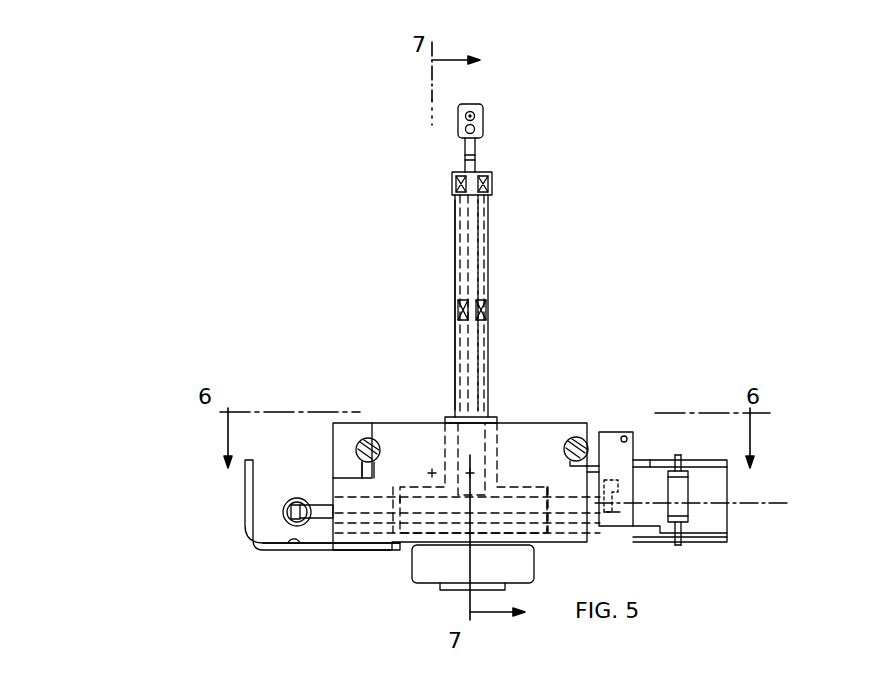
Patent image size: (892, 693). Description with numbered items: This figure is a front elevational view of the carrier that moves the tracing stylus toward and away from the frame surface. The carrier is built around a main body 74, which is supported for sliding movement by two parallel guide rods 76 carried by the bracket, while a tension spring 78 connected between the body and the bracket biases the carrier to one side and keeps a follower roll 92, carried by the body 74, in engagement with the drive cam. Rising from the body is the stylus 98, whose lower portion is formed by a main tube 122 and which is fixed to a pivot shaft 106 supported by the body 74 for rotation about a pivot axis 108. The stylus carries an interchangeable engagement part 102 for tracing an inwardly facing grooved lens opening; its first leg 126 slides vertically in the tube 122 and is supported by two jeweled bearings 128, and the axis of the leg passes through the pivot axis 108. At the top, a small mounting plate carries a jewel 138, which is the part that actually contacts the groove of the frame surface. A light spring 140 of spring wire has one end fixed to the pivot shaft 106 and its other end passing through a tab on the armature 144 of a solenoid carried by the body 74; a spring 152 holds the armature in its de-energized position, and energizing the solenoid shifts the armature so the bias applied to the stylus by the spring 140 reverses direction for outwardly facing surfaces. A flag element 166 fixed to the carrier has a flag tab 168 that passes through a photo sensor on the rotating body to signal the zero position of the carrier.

The main body 74 is at (426, 436).
The guide rods 76 is at (380, 450).
The tension spring 78 is at (298, 500).
The follower roll 92 is at (412, 566).
The stylus 98 is at (488, 270).
The engagement part 102 is at (478, 145).
The pivot shaft 106 is at (562, 520).
The pivot axis 108 is at (790, 476).
The main tube 122 is at (455, 243).
The first leg 126 is at (478, 366).
The jeweled bearings 128 is at (492, 192).
The jewel 138 is at (483, 118).
The light spring 140 is at (624, 436).
The armature 144 is at (700, 460).
The spring 152 is at (700, 523).
The flag element 166 is at (295, 550).
The flag tab 168 is at (245, 497).